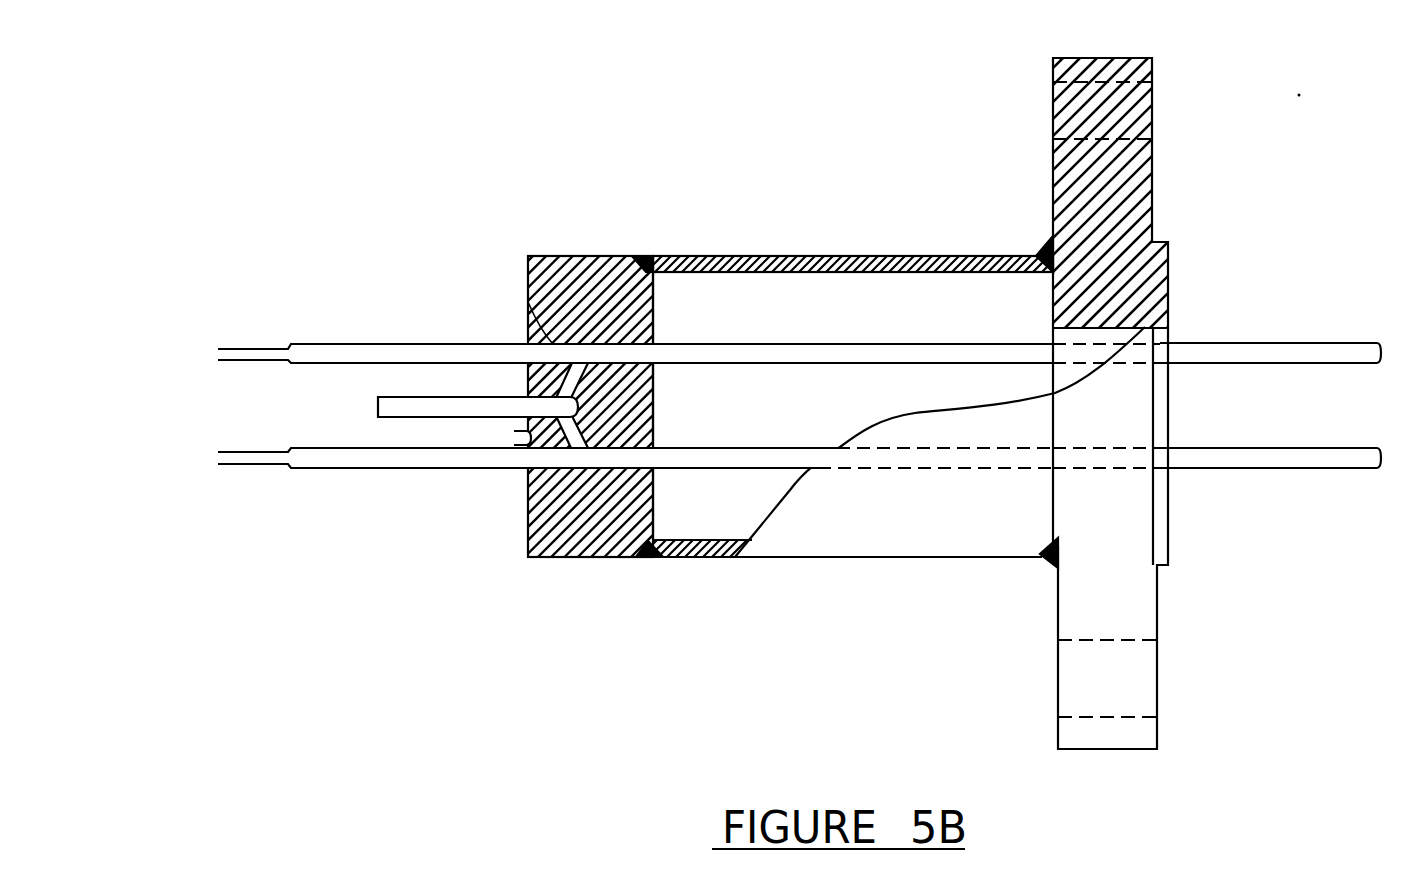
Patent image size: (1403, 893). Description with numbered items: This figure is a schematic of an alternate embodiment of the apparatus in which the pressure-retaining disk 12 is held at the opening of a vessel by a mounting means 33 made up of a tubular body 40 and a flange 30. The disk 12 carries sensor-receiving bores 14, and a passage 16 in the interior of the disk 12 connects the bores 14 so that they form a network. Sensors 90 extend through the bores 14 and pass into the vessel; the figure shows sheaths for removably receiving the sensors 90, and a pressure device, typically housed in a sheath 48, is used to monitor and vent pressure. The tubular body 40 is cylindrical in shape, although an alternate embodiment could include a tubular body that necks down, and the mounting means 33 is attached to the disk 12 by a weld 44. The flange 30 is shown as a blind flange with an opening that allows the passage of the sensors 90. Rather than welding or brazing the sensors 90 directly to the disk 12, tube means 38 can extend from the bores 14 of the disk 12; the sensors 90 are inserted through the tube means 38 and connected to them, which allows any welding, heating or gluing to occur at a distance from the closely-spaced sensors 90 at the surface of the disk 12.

The pressure-retaining disk 12 is at (570, 256).
The sensor-receiving bores 14 is at (528, 304).
The passage 16 is at (528, 438).
The flange 30 is at (1097, 58).
The mounting means 33 is at (1011, 113).
The tube means 38 is at (1267, 343).
The tubular body 40 is at (829, 256).
The weld 44 is at (644, 256).
The sheath 48 is at (378, 407).
The sensors 90 is at (257, 349).